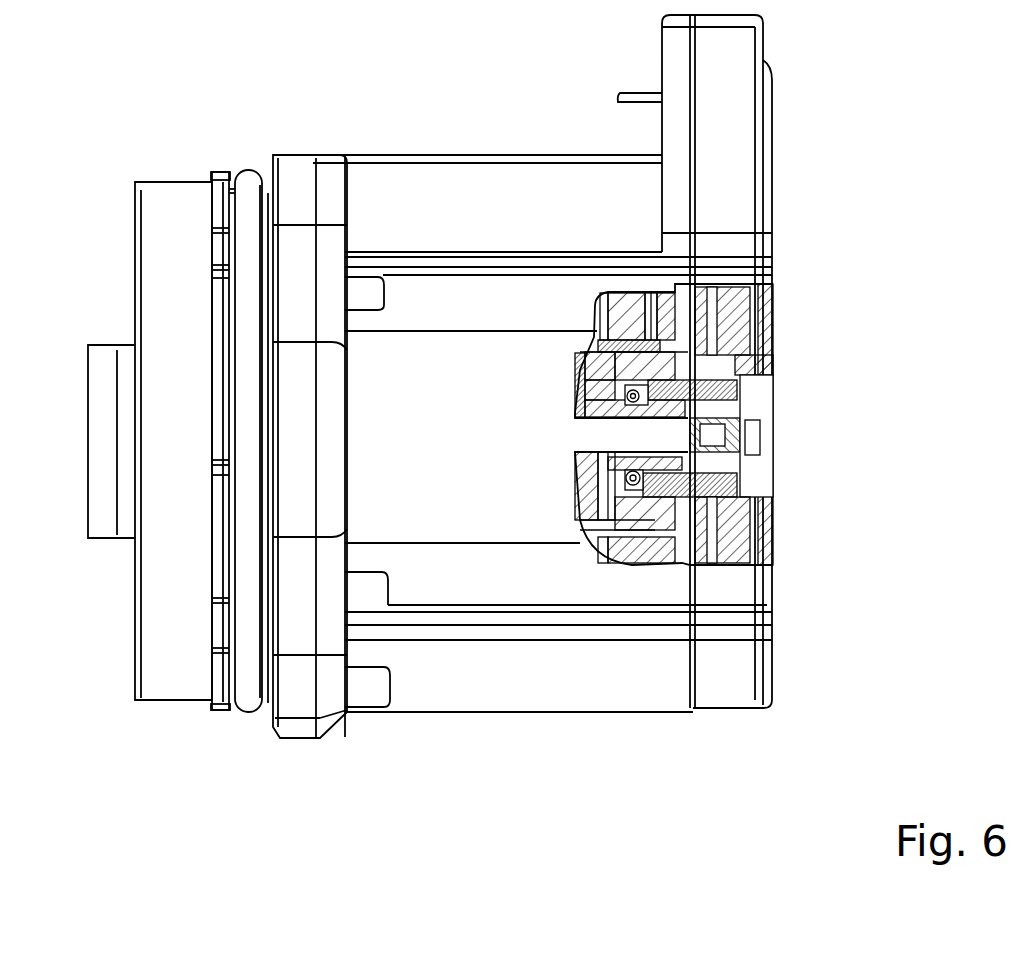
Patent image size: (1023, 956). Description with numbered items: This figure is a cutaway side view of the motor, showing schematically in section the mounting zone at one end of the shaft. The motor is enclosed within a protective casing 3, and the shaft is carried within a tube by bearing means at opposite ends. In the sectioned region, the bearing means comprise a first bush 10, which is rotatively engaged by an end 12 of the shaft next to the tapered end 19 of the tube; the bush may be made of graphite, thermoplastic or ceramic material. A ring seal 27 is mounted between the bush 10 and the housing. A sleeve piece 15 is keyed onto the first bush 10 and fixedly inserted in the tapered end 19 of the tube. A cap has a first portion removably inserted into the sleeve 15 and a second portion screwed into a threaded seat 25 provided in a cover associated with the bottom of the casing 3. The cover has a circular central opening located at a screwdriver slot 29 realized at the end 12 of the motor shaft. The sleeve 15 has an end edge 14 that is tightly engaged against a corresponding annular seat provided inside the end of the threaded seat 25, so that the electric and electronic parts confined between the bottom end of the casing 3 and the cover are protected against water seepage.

The protective casing 3 is at (465, 197).
The first bush 10 is at (640, 415).
The end of the shaft 12 is at (773, 572).
The end edge of the sleeve 14 is at (735, 507).
The sleeve piece 15 is at (745, 364).
The tapered end of the tube 19 is at (735, 297).
The threaded seat 25 is at (745, 384).
The ring seals 27 is at (600, 392).
The screwdriver slot 29 is at (707, 447).